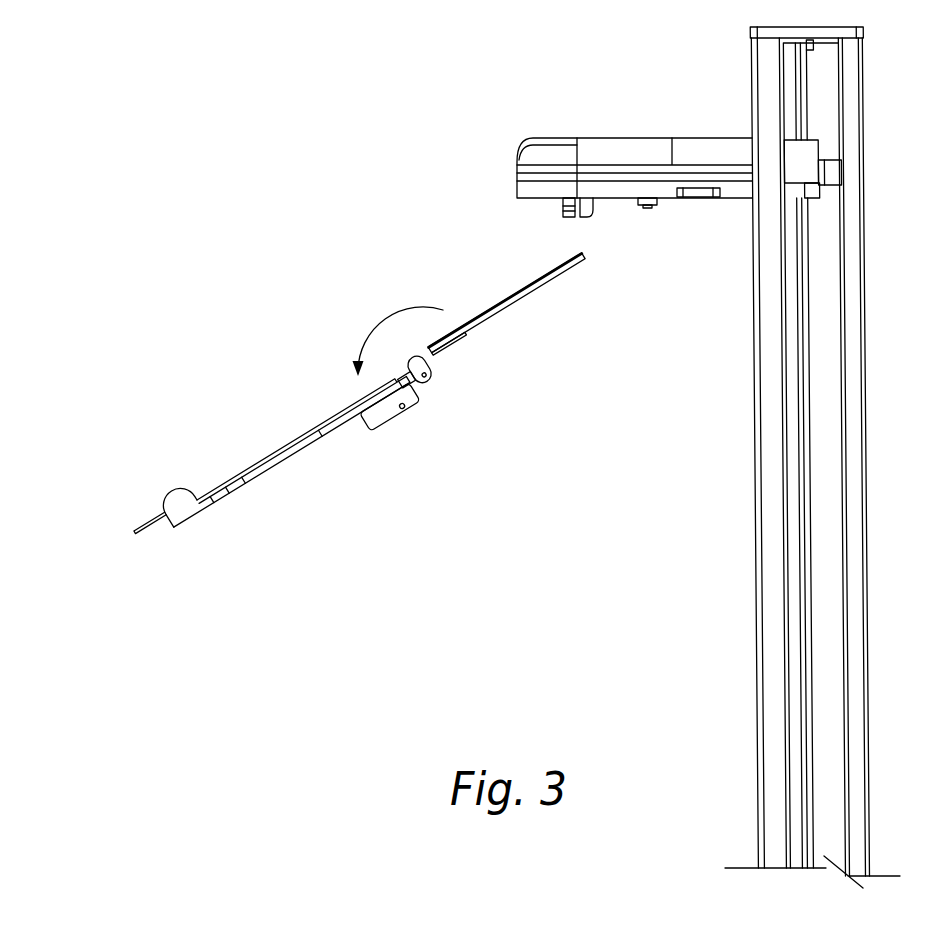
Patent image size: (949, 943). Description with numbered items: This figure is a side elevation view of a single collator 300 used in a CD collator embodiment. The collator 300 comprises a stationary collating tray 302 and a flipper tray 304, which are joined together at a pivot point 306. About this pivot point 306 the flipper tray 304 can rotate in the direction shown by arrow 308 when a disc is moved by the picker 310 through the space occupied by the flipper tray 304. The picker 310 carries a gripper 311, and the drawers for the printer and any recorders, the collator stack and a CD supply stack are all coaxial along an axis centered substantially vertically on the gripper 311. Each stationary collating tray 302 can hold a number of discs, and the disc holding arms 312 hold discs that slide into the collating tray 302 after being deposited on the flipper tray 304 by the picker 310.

The collator 300 is at (127, 171).
The stationary collating tray 302 is at (257, 486).
The flipper tray 304 is at (498, 323).
The pivot point 306 is at (431, 384).
The arrow 308 is at (865, 105).
The picker 310 is at (610, 137).
The gripper 311 is at (594, 217).
The disc holding arms 312 is at (162, 501).